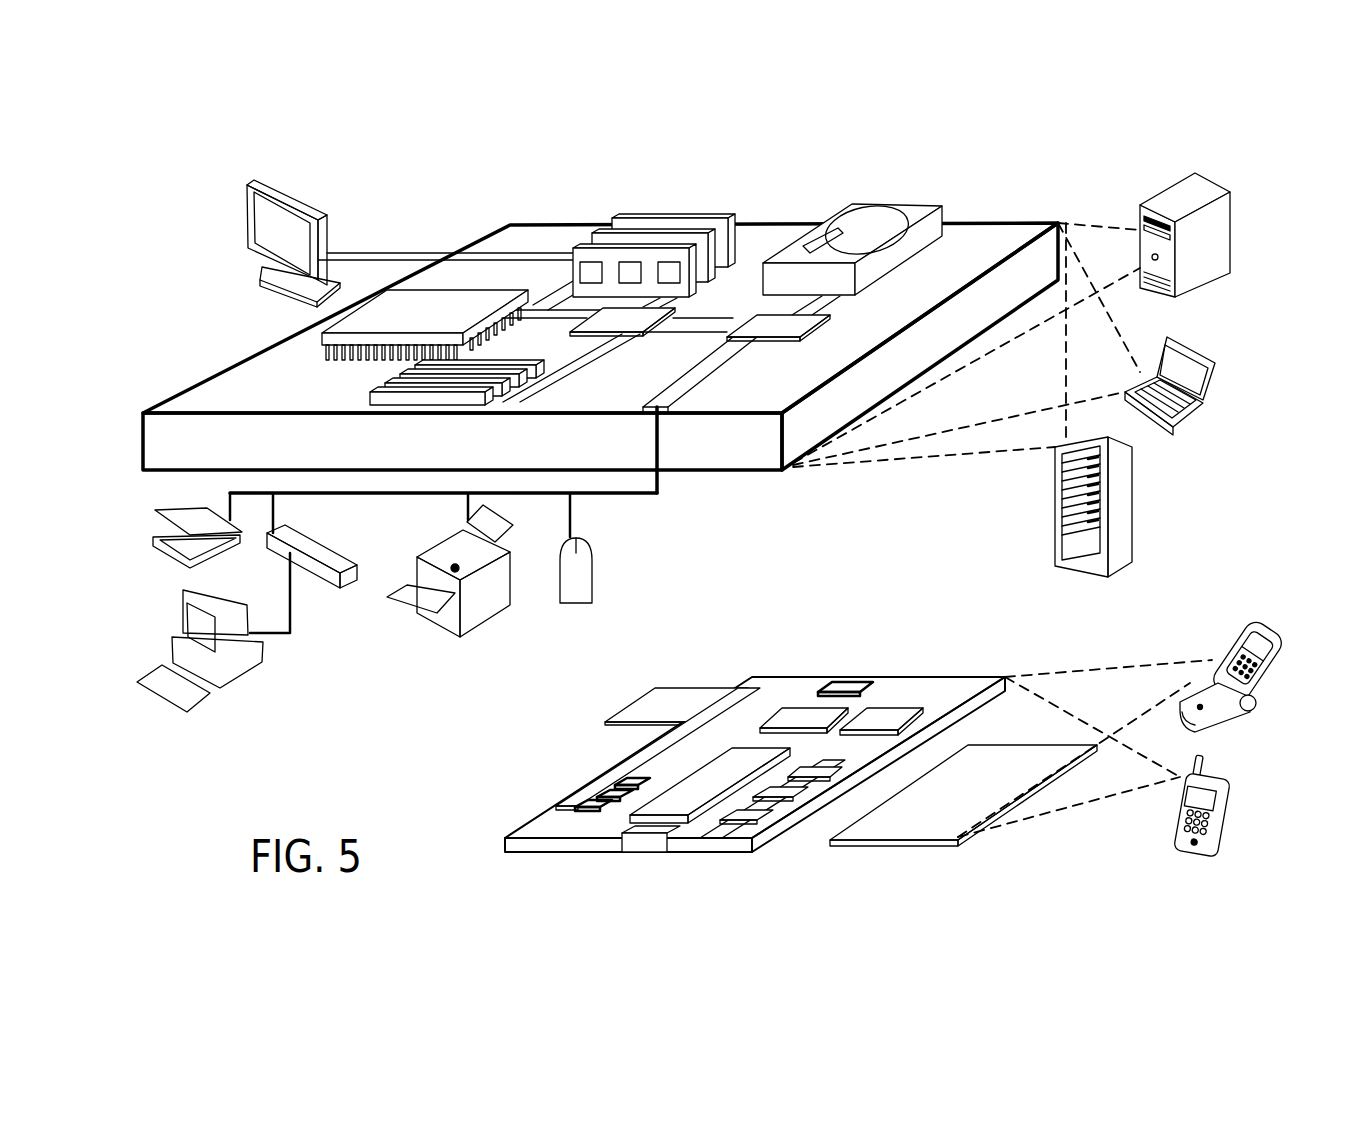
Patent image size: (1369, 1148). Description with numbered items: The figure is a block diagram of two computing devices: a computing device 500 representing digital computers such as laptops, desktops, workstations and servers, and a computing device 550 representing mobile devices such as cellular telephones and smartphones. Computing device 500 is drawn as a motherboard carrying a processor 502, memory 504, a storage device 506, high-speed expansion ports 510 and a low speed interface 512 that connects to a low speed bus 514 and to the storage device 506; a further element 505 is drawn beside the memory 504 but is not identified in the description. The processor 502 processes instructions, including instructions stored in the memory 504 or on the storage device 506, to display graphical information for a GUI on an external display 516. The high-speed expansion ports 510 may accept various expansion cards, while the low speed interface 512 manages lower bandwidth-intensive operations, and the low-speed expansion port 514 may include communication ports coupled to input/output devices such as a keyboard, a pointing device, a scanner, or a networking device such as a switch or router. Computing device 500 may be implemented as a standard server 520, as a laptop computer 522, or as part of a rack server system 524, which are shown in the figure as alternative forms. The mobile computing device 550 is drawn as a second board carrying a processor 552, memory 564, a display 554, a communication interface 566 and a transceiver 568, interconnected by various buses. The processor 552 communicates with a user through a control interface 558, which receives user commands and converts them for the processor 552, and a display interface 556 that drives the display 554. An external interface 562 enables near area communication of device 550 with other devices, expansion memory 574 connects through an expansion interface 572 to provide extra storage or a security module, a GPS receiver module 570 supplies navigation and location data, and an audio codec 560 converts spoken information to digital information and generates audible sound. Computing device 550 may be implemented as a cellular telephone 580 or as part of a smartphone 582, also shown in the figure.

The computing device 500 is at (480, 200).
The processor 502 is at (315, 345).
The memory 504 is at (640, 218).
The memory module 505 is at (602, 218).
The storage device 506 is at (858, 202).
The high-speed expansion ports 510 is at (393, 382).
The low speed interface 512 is at (768, 328).
The low speed bus 514 is at (660, 412).
The display 516 is at (258, 182).
The standard server 520 is at (1153, 193).
The laptop computer 522 is at (1180, 427).
The rack server system 524 is at (1055, 545).
The computing device 550 is at (577, 736).
The processor 552 is at (688, 802).
The display 554 is at (937, 818).
The display interface 556 is at (742, 815).
The control interface 558 is at (780, 797).
The audio codec 560 is at (820, 770).
The external interface 562 is at (643, 842).
The memory 564 is at (598, 797).
The communication interface 566 is at (798, 710).
The transceiver 568 is at (888, 715).
The GPS receiver module 570 is at (857, 683).
The expansion interface 572 is at (733, 687).
The expansion memory 574 is at (645, 698).
The cellular telephone 580 is at (1240, 633).
The smartphone 582 is at (1177, 810).